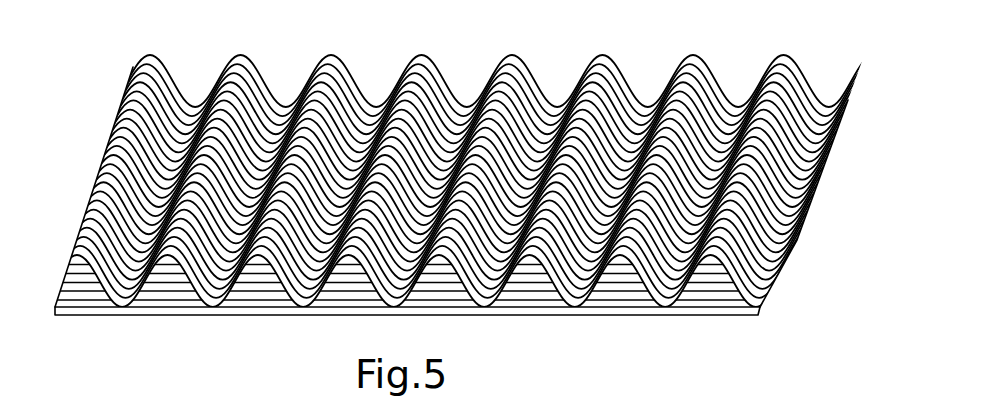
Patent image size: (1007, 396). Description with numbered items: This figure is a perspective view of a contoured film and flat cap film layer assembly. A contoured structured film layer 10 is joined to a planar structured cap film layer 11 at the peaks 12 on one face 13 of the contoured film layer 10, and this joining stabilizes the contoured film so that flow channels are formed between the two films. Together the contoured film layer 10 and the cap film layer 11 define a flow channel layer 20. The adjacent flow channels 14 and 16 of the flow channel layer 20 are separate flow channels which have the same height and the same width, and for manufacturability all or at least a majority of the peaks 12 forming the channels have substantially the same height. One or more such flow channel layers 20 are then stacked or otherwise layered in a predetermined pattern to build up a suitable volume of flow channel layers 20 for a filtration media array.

The contoured film layer 10 is at (790, 63).
The planar structured cap film layer 11 is at (90, 314).
The peaks 12 is at (575, 295).
The face 13 is at (603, 287).
The flow channel 14 is at (253, 295).
The flow channel 16 is at (353, 293).
The flow channel layer 20 is at (818, 246).